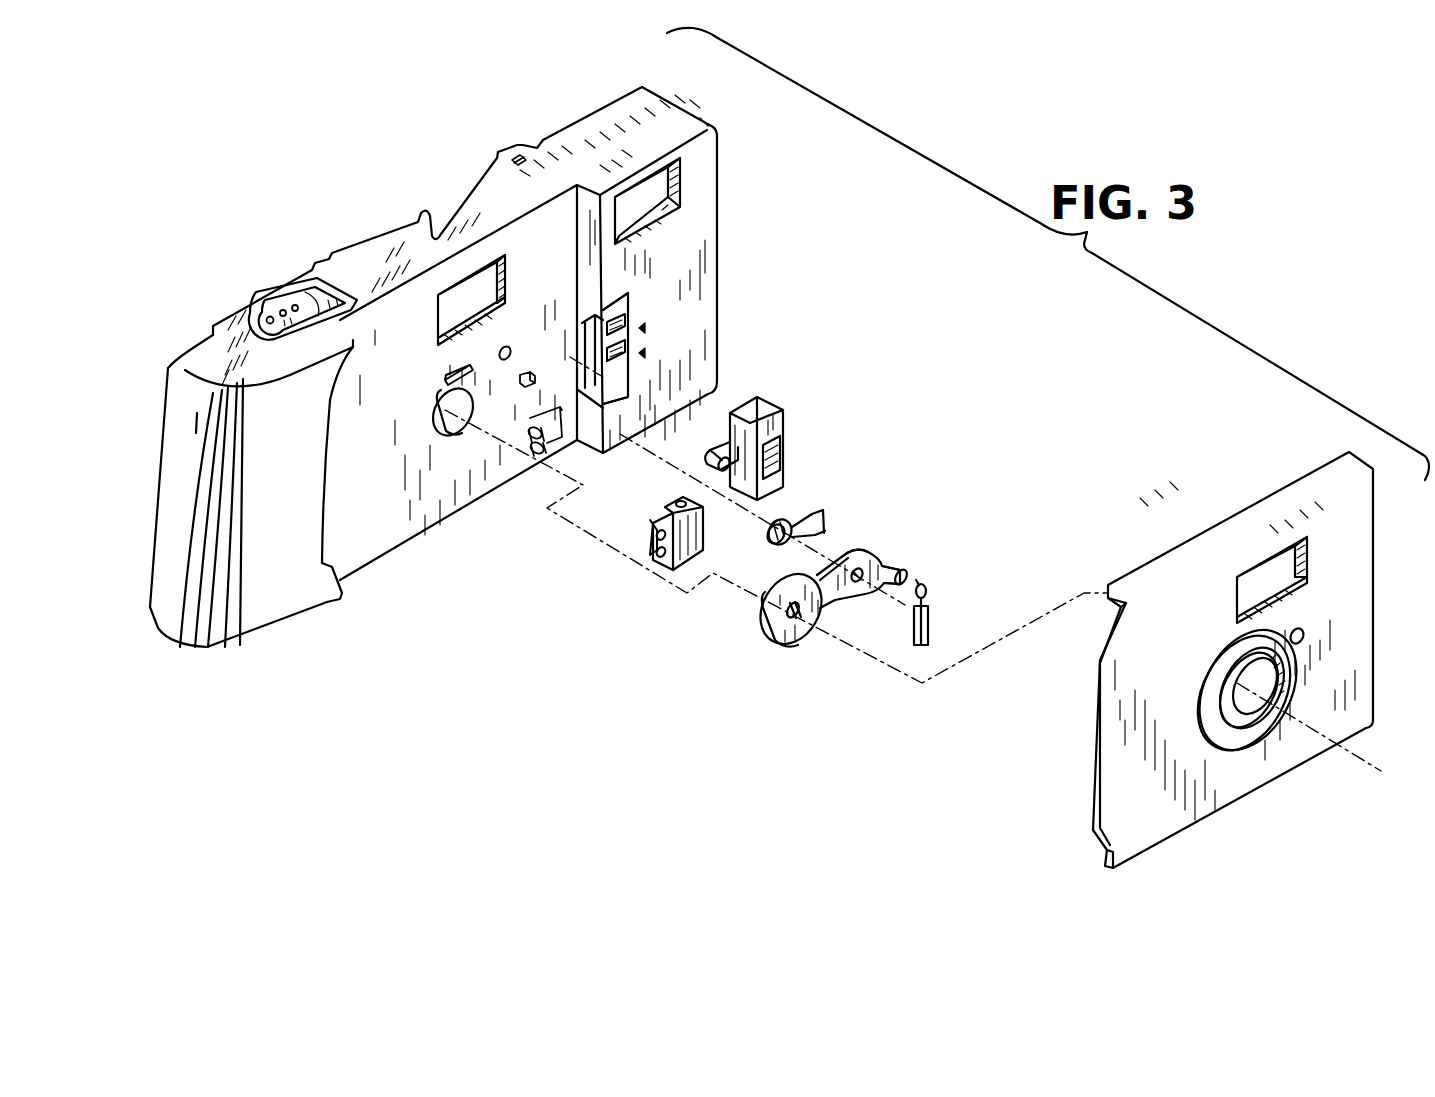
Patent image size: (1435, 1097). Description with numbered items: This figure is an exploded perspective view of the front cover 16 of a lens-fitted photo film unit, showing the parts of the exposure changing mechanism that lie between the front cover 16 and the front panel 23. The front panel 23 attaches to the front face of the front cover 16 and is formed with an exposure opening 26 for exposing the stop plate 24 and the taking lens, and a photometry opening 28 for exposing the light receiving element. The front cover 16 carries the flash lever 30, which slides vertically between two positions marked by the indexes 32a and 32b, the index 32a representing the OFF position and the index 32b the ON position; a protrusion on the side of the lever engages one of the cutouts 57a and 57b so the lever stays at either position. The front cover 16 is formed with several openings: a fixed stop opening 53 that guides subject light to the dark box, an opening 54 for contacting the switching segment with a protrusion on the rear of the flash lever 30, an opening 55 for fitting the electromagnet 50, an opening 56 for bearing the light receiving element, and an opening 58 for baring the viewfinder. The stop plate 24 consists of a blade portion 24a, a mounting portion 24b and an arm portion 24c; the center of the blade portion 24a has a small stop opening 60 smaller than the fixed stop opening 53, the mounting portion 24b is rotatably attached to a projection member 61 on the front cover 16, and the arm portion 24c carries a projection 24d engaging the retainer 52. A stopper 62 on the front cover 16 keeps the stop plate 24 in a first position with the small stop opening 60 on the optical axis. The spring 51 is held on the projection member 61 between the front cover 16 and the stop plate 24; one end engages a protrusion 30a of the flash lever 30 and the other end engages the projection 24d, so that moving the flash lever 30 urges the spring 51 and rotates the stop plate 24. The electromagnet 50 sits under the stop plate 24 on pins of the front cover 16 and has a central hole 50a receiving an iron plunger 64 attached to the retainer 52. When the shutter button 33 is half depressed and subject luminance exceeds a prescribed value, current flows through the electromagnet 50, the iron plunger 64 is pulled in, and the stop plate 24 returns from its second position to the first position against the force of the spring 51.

The front cover 16 is at (710, 173).
The front panel 23 is at (1112, 760).
The stop plate 24 is at (840, 597).
The blade portion 24a is at (790, 650).
The mounting portion 24b is at (863, 557).
The arm portion 24c is at (883, 563).
The projection 24d is at (907, 573).
The exposure opening 26 is at (1257, 695).
The photometry opening 28 is at (1300, 632).
The flash lever 30 is at (792, 437).
The protrusion 30a is at (742, 420).
The index 32a is at (680, 334).
The index 32b is at (670, 312).
The shutter button 33 is at (300, 300).
The electromagnet 50 is at (693, 547).
The hole 50a is at (660, 507).
The spring 51 is at (797, 517).
The retainer 52 is at (927, 583).
The fixed stop opening 53 is at (455, 440).
The opening 54 is at (578, 390).
The opening 55 is at (557, 457).
The opening 56 is at (507, 346).
The cutout 57a is at (623, 362).
The cutout 57b is at (622, 322).
The opening 58 is at (480, 280).
The small stop opening 60 is at (762, 606).
The projection member 61 is at (520, 380).
The stopper 62 is at (445, 372).
The iron plunger 64 is at (930, 617).